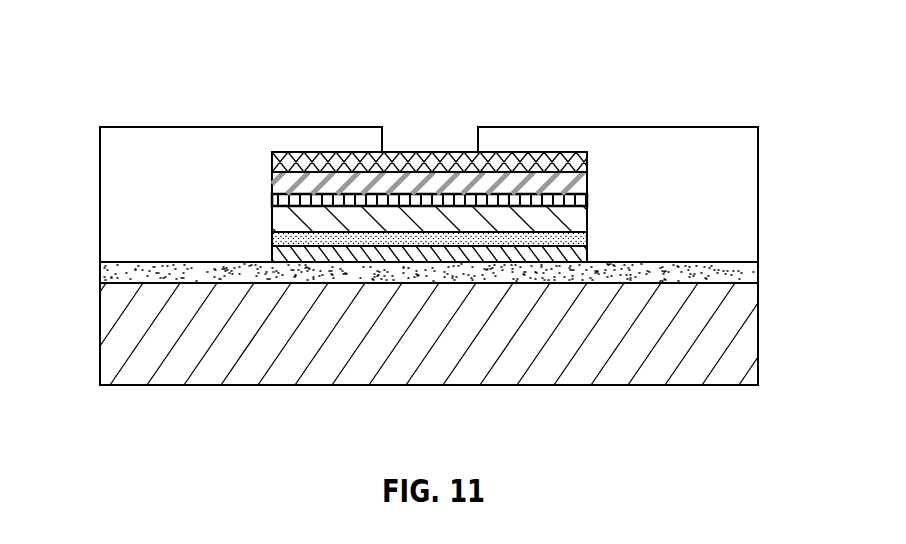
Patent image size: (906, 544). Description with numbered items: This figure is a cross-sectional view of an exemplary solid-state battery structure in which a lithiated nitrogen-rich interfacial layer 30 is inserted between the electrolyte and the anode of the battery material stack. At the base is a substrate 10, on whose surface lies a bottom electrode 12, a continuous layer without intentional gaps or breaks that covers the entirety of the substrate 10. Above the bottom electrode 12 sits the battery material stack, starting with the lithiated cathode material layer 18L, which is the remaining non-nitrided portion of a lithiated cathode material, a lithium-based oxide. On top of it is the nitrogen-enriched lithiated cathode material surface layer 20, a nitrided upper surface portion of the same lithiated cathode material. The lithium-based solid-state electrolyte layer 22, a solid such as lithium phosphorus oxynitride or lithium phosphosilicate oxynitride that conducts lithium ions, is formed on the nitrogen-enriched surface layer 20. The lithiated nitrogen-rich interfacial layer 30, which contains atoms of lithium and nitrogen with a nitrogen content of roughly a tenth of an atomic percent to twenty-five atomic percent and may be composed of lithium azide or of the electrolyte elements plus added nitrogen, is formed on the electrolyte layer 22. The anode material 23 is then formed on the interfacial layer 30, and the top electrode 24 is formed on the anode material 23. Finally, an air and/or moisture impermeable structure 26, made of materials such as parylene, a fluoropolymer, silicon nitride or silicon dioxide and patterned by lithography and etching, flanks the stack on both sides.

The substrate 10 is at (443, 342).
The bottom electrode 12 is at (107, 273).
The lithiated cathode material layer 18L is at (326, 255).
The nitrogen-enriched lithiated cathode material surface layer 20 is at (349, 240).
The lithium-based solid-state electrolyte layer 22 is at (373, 218).
The anode material 23 is at (518, 177).
The top electrode 24 is at (495, 168).
The air and/or moisture impermeable structure 26 is at (191, 204).
The lithiated nitrogen-rich interfacial layer 30 is at (538, 202).